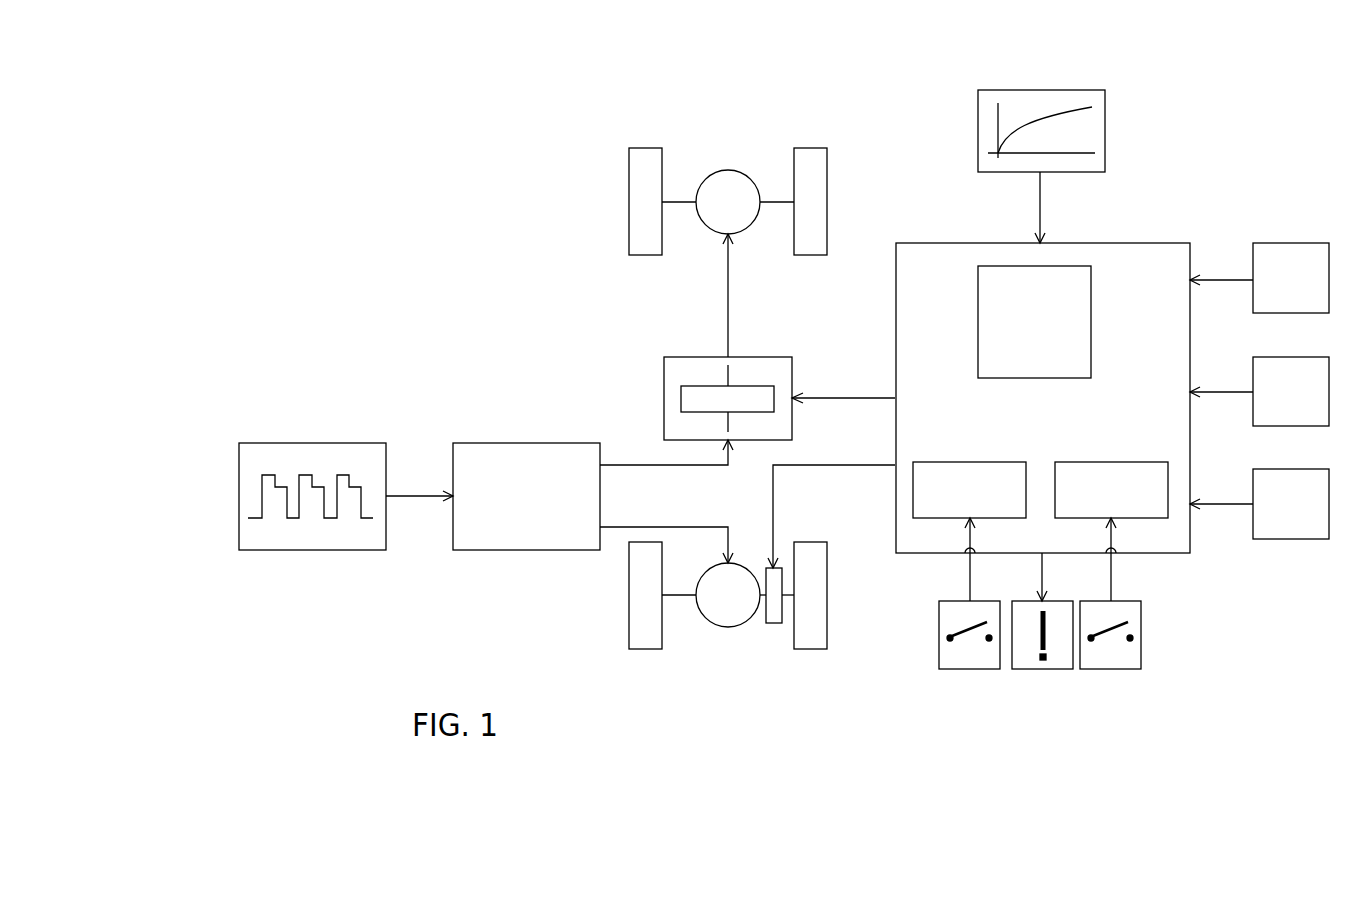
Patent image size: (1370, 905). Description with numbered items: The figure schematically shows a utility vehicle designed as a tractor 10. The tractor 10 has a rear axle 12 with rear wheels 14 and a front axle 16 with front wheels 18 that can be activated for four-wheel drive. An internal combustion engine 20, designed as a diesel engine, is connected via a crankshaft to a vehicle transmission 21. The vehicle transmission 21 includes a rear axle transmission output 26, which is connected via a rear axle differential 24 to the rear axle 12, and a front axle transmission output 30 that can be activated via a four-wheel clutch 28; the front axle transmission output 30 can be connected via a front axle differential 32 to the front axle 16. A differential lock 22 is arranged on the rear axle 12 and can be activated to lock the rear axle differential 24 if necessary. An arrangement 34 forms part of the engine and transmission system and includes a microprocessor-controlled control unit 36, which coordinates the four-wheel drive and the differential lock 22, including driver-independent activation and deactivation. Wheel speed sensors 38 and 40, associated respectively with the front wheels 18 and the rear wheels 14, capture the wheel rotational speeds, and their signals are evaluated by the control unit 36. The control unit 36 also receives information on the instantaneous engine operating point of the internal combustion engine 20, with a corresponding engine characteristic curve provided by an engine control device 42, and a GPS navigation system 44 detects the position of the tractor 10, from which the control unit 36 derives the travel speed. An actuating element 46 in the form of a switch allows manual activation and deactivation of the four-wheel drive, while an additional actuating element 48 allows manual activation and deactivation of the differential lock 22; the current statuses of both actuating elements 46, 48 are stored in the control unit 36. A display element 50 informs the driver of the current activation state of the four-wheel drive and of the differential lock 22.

The tractor 10 is at (648, 321).
The rear axle 12 is at (759, 610).
The rear wheels 14 is at (645, 615).
The front axle 16 is at (775, 190).
The front wheels 18 is at (648, 178).
The internal combustion engine 20 is at (333, 443).
The vehicle transmission 21 is at (515, 507).
The differential lock 22 is at (773, 578).
The rear axle differential 24 is at (725, 600).
The rear axle transmission output 26 is at (600, 527).
The four-wheel clutch 28 is at (772, 357).
The front axle transmission output 30 is at (600, 466).
The front axle differential 32 is at (720, 203).
The arrangement 34 is at (1210, 156).
The control unit 36 is at (1135, 242).
The wheel speed sensor 38 is at (1279, 289).
The wheel speed sensor 40 is at (1279, 400).
The engine control device 42 is at (1010, 88).
The GPS navigation system 44 is at (1279, 531).
The actuating element 46 is at (958, 669).
The actuating element 48 is at (1098, 669).
The display element 50 is at (1028, 669).